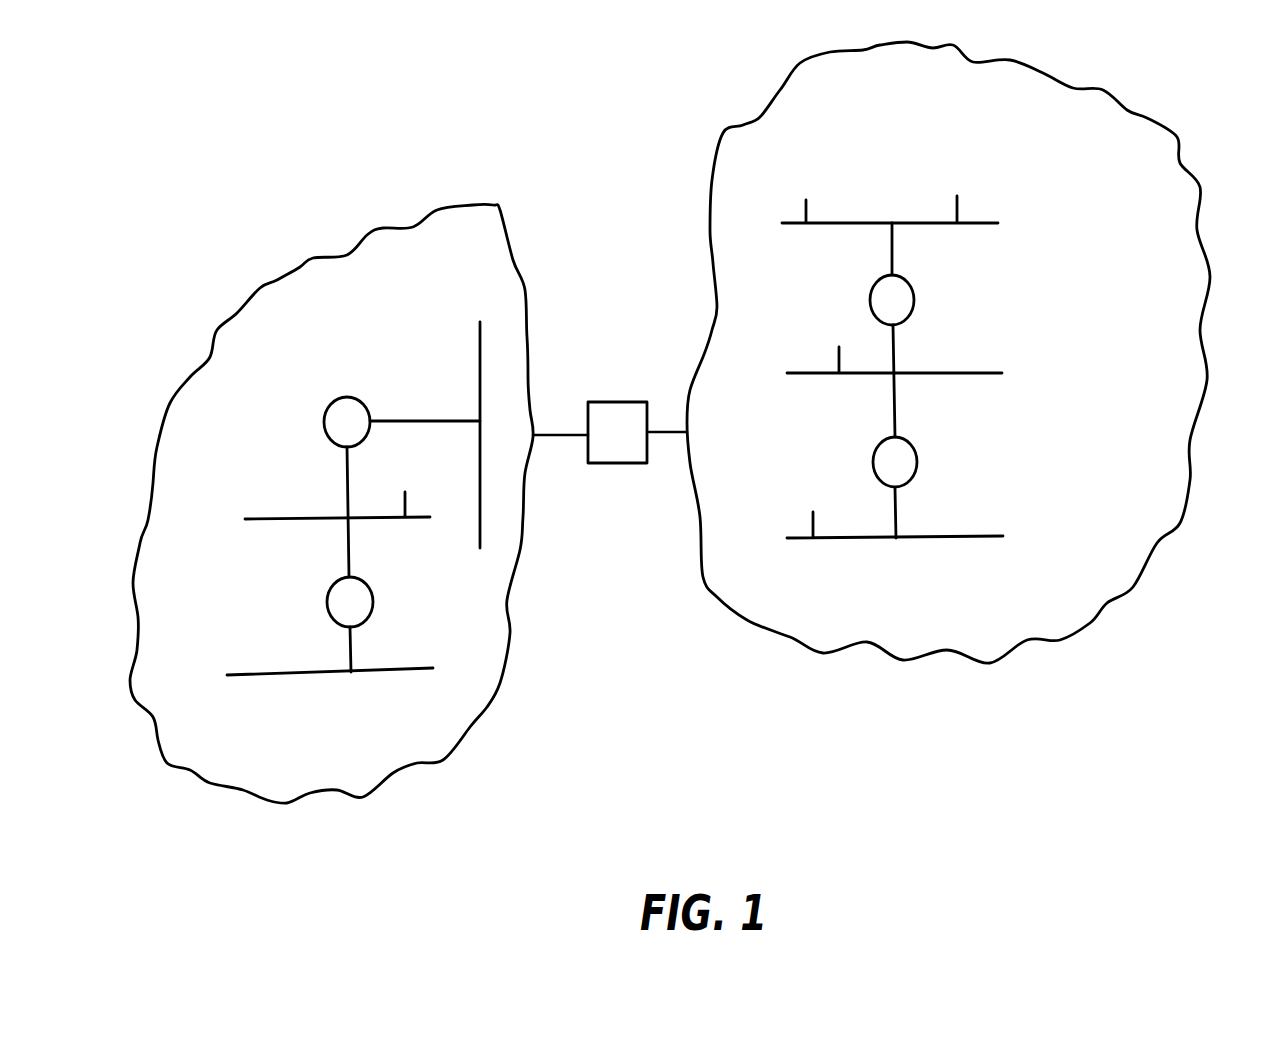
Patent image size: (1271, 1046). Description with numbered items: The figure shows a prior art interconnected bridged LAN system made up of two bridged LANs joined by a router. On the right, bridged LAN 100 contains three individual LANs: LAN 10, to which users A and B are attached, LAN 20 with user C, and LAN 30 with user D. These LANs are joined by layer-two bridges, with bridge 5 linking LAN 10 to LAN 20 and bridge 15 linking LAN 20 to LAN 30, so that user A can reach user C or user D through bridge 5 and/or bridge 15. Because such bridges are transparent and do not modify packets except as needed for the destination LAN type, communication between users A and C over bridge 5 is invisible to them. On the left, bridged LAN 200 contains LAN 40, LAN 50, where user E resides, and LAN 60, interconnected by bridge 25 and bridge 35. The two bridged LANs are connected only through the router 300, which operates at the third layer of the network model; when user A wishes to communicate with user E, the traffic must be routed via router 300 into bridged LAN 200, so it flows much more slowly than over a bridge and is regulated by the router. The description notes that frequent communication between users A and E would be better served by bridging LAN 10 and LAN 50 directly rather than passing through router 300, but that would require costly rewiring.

The bridged LAN 100 is at (1177, 137).
The bridged LAN 200 is at (307, 258).
The router 300 is at (617, 402).
The LAN 10 is at (998, 223).
The LAN 20 is at (1002, 373).
The LAN 30 is at (1003, 536).
The LAN 40 is at (480, 343).
The LAN 50 is at (262, 518).
The LAN 60 is at (243, 672).
The bridge 5 is at (914, 292).
The bridge 15 is at (917, 457).
The bridge 25 is at (336, 400).
The bridge 35 is at (373, 598).